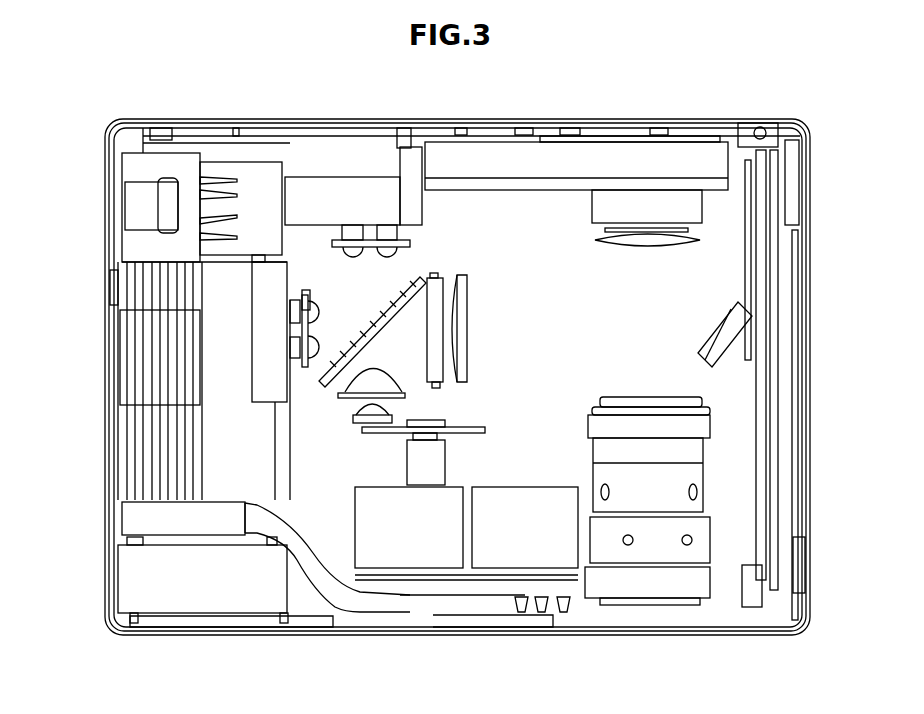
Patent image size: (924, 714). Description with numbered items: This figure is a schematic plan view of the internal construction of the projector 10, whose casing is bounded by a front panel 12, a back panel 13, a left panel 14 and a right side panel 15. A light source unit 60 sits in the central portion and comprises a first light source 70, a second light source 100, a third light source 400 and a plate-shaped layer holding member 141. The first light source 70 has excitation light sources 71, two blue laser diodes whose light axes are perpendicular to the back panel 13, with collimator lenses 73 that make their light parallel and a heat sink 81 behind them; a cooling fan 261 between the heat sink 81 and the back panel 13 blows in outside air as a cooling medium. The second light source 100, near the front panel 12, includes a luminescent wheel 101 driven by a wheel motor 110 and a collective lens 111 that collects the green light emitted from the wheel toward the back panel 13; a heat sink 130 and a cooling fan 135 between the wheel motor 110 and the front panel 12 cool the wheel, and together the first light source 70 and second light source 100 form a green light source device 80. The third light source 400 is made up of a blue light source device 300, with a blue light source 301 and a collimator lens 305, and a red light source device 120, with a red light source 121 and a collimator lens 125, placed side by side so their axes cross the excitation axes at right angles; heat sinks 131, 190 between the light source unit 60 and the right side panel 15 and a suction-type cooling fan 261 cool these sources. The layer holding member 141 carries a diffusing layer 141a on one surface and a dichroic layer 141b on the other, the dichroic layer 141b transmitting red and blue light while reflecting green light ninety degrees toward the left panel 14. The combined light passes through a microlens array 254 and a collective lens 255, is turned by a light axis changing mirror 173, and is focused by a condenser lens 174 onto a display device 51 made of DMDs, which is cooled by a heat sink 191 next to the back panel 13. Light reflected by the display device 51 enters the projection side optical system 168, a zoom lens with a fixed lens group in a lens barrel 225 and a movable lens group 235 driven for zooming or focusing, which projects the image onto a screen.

The projector 10 is at (858, 100).
The front panel 12 is at (172, 637).
The back panel 13 is at (163, 125).
The left panel 14 is at (808, 228).
The right side panel 15 is at (125, 270).
The display device 51 is at (700, 165).
The light source unit 60 is at (499, 229).
The first light source 70 is at (325, 159).
The excitation light sources 71 is at (378, 222).
The collimator lenses 73 is at (388, 246).
The green light source device 80 is at (342, 368).
The heat sink 81 is at (355, 226).
The second light source 100 is at (388, 452).
The luminescent wheel 101 is at (500, 530).
The wheel motor 110 is at (425, 540).
The collective lens 111 is at (348, 405).
The red light source device 120 is at (165, 394).
The red light source 121 is at (290, 332).
The collimator lens 125 is at (313, 368).
The heat sink 130 is at (150, 520).
The heat sink 131 is at (290, 362).
The cooling fan 135 is at (478, 433).
The layer holding member 141 is at (329, 473).
The diffusing layer 141a is at (373, 328).
The dichroic layer 141b is at (368, 328).
The projection side optical system 168 is at (665, 492).
The light axis changing mirror 173 is at (752, 338).
The condenser lens 174 is at (633, 238).
The heat sink 190 is at (150, 282).
The heat sink 191 is at (560, 168).
The lens barrel 225 is at (668, 577).
The movable lens group 235 is at (712, 458).
The microlens array 254 is at (458, 297).
The collective lens 255 is at (474, 300).
The cooling fan 261 is at (155, 582).
The blue light source device 300 is at (298, 370).
The blue light source 301 is at (200, 315).
The collimator lens 305 is at (313, 290).
The third light source 400 is at (165, 394).